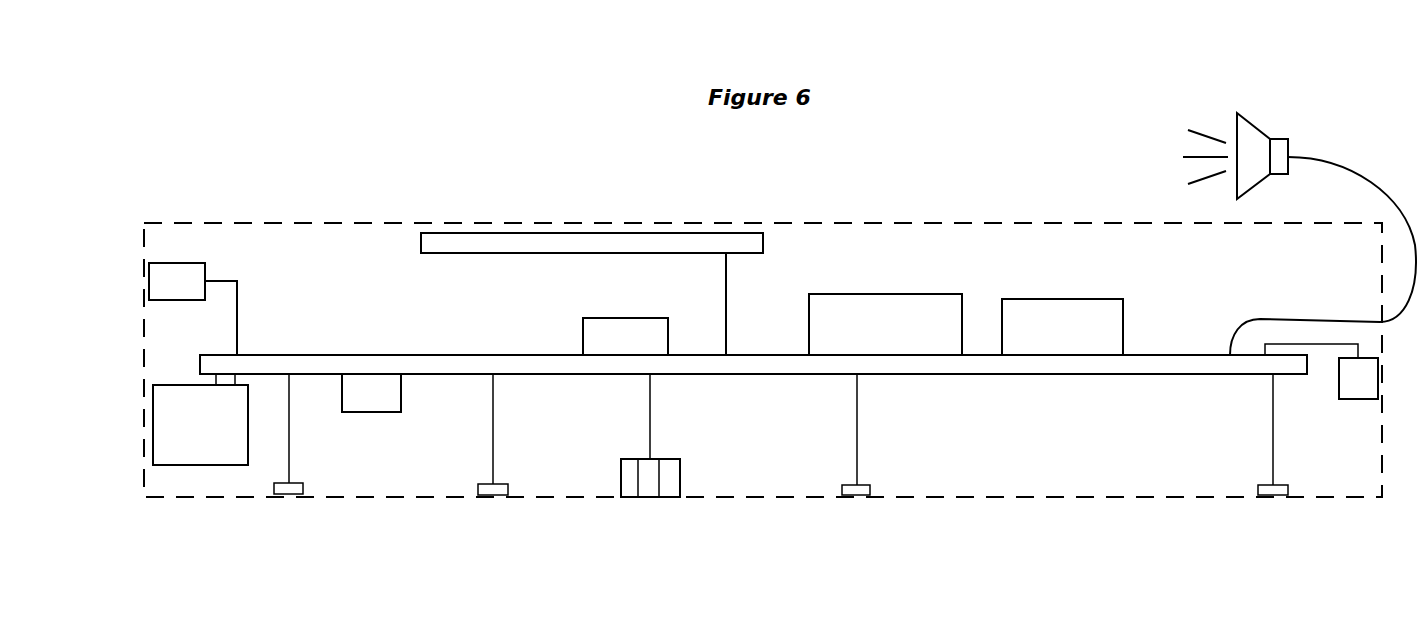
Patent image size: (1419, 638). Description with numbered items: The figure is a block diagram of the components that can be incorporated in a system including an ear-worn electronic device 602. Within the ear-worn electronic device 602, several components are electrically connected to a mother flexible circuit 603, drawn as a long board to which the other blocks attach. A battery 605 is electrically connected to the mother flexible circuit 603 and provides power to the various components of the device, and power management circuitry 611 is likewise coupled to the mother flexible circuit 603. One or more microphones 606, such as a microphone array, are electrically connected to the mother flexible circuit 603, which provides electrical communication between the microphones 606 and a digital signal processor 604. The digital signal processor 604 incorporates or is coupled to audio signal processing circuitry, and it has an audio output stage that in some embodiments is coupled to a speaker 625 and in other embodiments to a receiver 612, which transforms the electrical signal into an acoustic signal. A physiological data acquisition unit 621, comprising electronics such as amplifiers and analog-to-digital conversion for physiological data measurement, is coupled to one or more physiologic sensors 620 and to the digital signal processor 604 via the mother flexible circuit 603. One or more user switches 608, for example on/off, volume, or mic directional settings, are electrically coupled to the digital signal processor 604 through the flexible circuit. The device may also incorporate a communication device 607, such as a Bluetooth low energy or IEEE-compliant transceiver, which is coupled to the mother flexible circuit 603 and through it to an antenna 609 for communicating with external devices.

The ear-worn electronic device 602 is at (269, 222).
The mother flexible circuit 603 is at (1013, 375).
The digital signal processor 604 is at (878, 294).
The battery 605 is at (198, 465).
The microphones 606 is at (149, 281).
The communication device 607 is at (621, 318).
The user switches 608 is at (650, 497).
The antenna 609 is at (421, 241).
The power management circuitry 611 is at (370, 412).
The receiver 612 is at (1281, 139).
The physiologic sensors 620 is at (289, 496).
The physiological data acquisition unit 621 is at (1050, 299).
The speaker 625 is at (1339, 375).